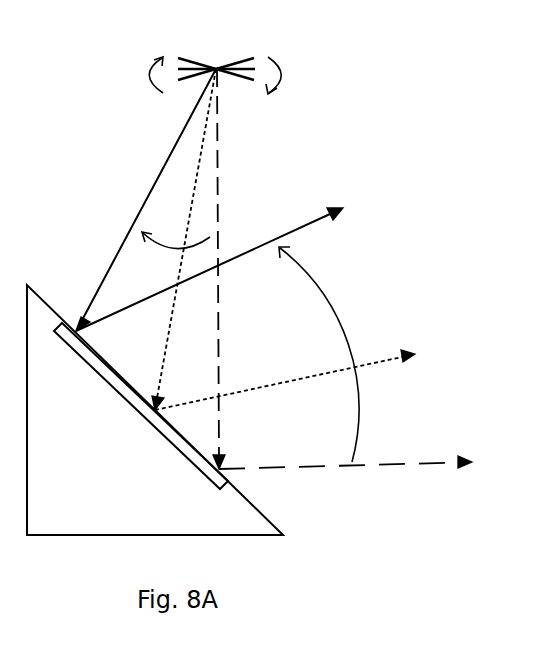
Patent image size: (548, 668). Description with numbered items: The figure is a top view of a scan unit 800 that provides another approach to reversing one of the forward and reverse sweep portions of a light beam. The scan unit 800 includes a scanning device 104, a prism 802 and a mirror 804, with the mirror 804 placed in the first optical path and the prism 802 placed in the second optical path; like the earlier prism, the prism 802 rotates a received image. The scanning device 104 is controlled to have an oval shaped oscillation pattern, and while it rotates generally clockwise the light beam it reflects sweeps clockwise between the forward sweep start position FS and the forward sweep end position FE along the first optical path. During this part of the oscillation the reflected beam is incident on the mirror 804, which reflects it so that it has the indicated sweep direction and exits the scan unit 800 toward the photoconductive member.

The scan unit 800 is at (75, 31).
The scanning device 104 is at (227, 40).
The prism 802 is at (233, 523).
The mirror 804 is at (179, 445).
The forward sweep end position FE is at (142, 208).
The forward sweep start position FS is at (217, 197).